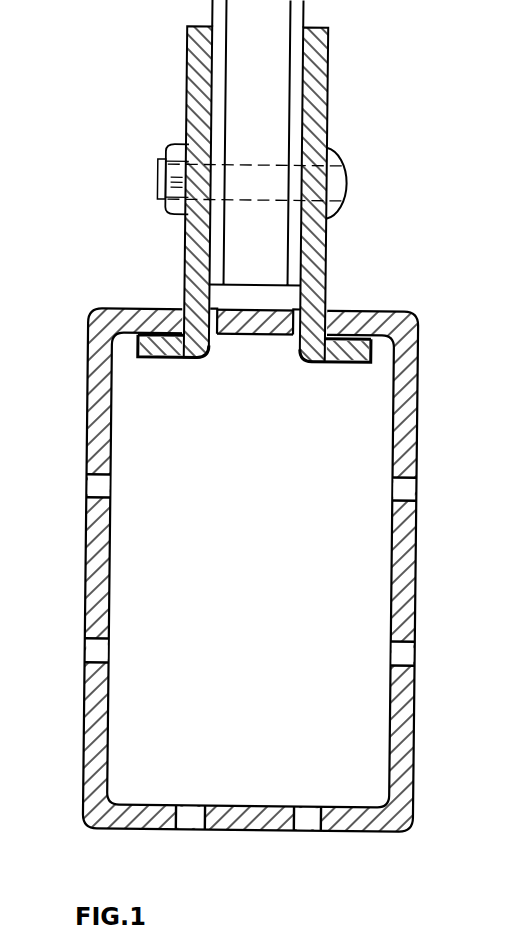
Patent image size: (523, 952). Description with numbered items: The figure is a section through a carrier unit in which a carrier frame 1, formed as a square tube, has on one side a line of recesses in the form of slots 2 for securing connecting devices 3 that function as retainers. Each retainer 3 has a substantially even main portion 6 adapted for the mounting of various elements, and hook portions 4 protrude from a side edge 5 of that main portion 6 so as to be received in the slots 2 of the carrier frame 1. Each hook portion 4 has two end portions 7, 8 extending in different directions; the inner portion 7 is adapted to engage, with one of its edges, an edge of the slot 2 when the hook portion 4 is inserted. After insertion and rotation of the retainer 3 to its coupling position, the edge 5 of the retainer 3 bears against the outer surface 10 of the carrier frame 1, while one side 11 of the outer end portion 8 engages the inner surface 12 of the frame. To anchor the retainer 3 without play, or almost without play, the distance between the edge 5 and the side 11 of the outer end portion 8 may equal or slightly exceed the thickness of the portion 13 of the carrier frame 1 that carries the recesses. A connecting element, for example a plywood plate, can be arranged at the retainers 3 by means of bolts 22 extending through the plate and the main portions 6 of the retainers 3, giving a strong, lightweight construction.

The carrier frame 1 is at (427, 422).
The slots 2 is at (89, 501).
The connecting device 3 is at (174, 76).
The hook portion 4 is at (128, 347).
The side edge 5 is at (181, 284).
The main portion 6 is at (184, 234).
The inner end portion 7 is at (197, 359).
The outer end portion 8 is at (175, 359).
The outer surface 10 is at (324, 308).
The side of outer end portion 11 is at (150, 359).
The inner surface 12 is at (172, 330).
The frame portion provided with recesses 13 is at (268, 325).
The bolts 22 is at (341, 176).